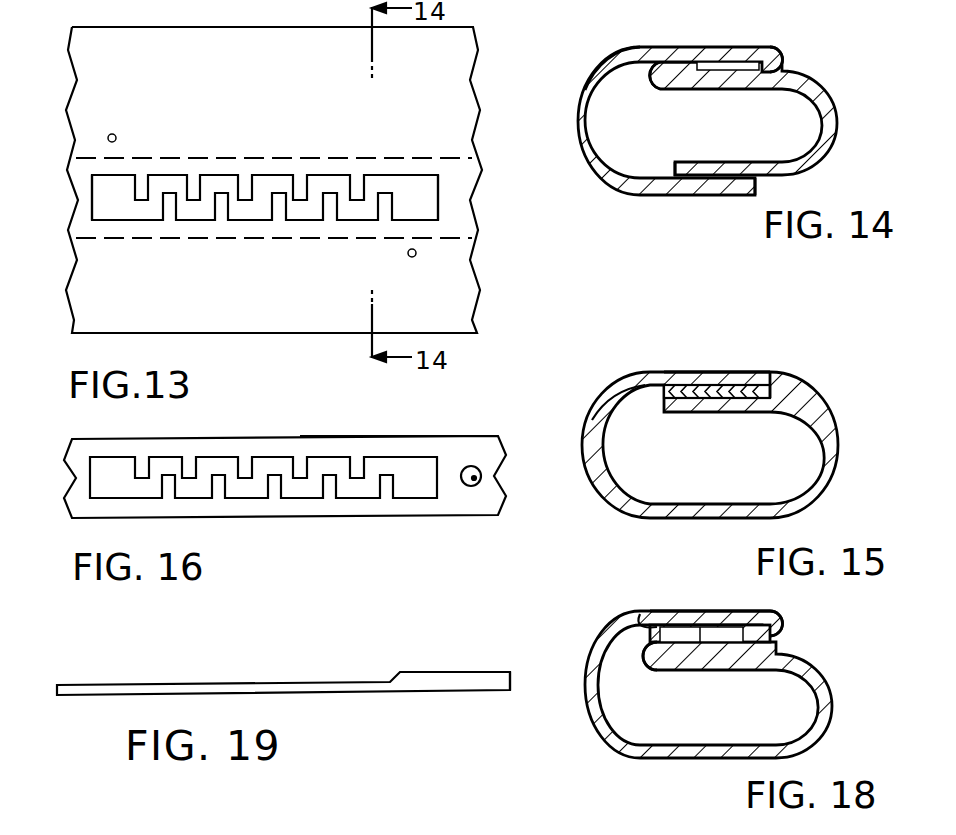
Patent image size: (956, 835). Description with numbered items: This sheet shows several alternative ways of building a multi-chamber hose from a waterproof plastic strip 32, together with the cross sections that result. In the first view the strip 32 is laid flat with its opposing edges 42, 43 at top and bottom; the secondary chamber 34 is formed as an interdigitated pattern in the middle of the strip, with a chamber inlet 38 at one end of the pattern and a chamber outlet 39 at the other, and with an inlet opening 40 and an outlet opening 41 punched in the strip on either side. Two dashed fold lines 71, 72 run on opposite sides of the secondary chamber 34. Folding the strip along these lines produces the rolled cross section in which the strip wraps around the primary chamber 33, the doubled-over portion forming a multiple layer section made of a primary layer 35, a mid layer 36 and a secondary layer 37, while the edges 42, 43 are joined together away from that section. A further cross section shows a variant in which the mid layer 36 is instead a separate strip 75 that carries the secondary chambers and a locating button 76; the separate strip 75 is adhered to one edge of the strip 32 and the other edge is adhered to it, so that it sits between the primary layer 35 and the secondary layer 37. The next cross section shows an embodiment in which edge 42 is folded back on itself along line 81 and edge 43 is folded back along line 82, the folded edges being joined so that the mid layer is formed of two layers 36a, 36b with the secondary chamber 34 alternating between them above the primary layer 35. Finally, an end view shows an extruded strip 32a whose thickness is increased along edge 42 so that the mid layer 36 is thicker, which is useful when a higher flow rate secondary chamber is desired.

In FIG. 13, the strip 32 is at (456, 276).
In FIG. 19, the strip 32a is at (316, 688).
In FIG. 14, the primary chamber 33 is at (703, 122).
In FIG. 13, the secondary chambers 34 is at (221, 178).
In FIG. 16, the secondary chambers 34 is at (212, 462).
In FIG. 14, the secondary chambers 34 is at (742, 61).
In FIG. 18, the secondary chambers 34 is at (713, 652).
In FIG. 14, the primary layer 35 is at (748, 82).
In FIG. 15, the primary layer 35 is at (733, 411).
In FIG. 18, the primary layer 35 is at (667, 672).
In FIG. 19, the mid layer 36 is at (433, 677).
In FIG. 14, the mid layer 36 is at (663, 80).
In FIG. 15, the mid layer 36 is at (773, 390).
In FIG. 18, the edge portion of mid layer 36a is at (637, 618).
In FIG. 18, the mid layer second section 36b is at (772, 648).
In FIG. 14, the secondary layer 37 is at (688, 50).
In FIG. 15, the secondary layer 37 is at (763, 373).
In FIG. 18, the secondary layer 37 is at (687, 627).
In FIG. 13, the chamber inlet 38 is at (430, 190).
In FIG. 13, the chamber outlet 39 is at (108, 193).
In FIG. 13, the inlet openings 40 is at (407, 253).
In FIG. 13, the outlet openings 41 is at (117, 135).
In FIG. 13, the edge 42 is at (242, 342).
In FIG. 19, the edge 42 is at (512, 680).
In FIG. 14, the edge 42 is at (677, 163).
In FIG. 13, the edge 43 is at (176, 24).
In FIG. 14, the edge 43 is at (750, 192).
In FIG. 13, the fold line 71 is at (244, 238).
In FIG. 14, the fold line 71 is at (617, 60).
In FIG. 13, the fold line 72 is at (324, 152).
In FIG. 14, the fold line 72 is at (784, 53).
In FIG. 16, the separate strip 75 is at (437, 440).
In FIG. 15, the separate strip 75 is at (690, 372).
In FIG. 16, the locating button 76 is at (465, 483).
In FIG. 15, the locating button 76 is at (718, 377).
In FIG. 18, the fold line 81 is at (780, 620).
In FIG. 18, the fold line 82 is at (647, 657).